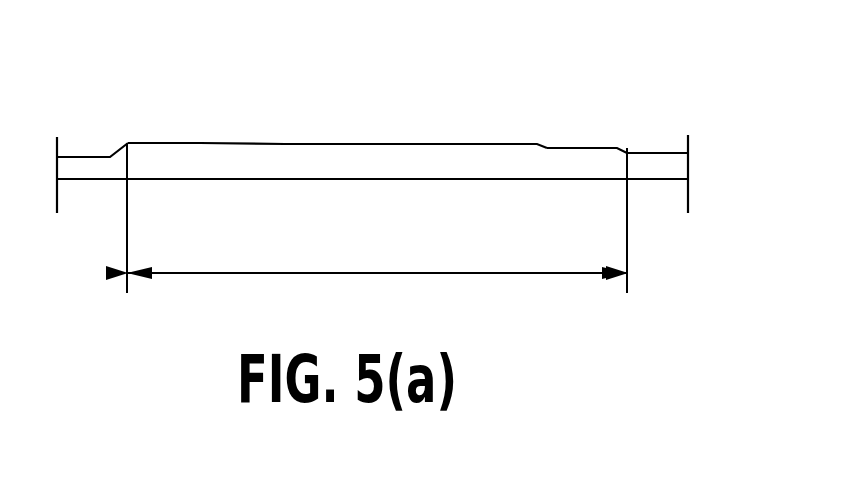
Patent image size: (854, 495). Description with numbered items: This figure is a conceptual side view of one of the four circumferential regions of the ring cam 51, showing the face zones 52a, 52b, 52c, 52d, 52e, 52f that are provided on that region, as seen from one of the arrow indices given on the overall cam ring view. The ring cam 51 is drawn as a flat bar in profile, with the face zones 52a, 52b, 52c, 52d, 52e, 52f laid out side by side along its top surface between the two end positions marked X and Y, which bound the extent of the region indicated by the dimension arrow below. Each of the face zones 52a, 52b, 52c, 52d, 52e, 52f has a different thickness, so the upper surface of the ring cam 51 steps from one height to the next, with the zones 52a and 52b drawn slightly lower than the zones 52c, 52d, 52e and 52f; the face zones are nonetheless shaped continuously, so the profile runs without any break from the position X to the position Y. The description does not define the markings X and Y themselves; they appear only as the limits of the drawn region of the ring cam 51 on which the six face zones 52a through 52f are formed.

The ring cam 51 is at (273, 180).
The face zone 52a is at (580, 148).
The face zone 52b is at (500, 144).
The face zone 52c is at (410, 143).
The face zone 52d is at (322, 143).
The face zone 52e is at (243, 143).
The face zone 52f is at (157, 143).
The position X is at (111, 133).
The position Y is at (634, 140).